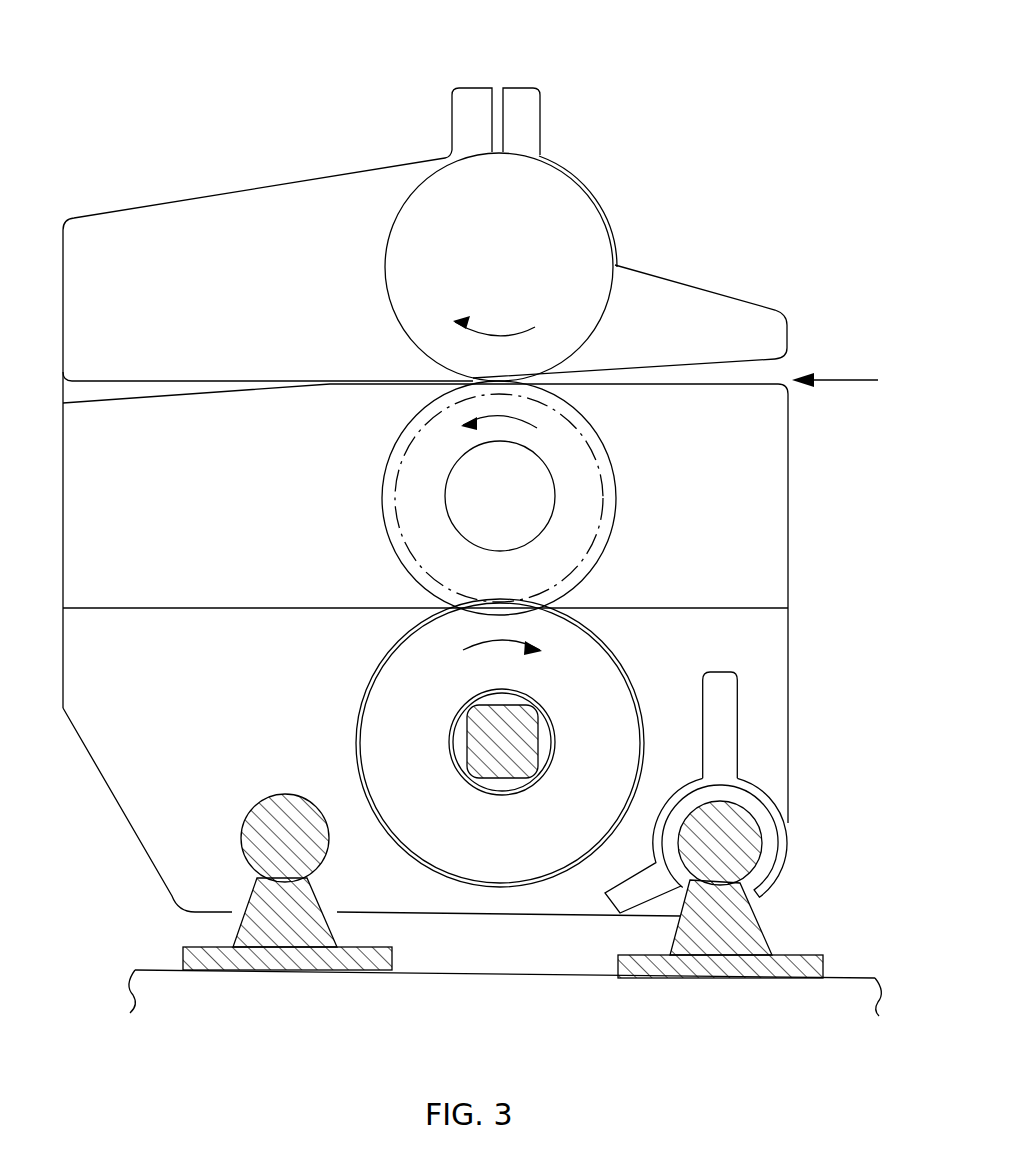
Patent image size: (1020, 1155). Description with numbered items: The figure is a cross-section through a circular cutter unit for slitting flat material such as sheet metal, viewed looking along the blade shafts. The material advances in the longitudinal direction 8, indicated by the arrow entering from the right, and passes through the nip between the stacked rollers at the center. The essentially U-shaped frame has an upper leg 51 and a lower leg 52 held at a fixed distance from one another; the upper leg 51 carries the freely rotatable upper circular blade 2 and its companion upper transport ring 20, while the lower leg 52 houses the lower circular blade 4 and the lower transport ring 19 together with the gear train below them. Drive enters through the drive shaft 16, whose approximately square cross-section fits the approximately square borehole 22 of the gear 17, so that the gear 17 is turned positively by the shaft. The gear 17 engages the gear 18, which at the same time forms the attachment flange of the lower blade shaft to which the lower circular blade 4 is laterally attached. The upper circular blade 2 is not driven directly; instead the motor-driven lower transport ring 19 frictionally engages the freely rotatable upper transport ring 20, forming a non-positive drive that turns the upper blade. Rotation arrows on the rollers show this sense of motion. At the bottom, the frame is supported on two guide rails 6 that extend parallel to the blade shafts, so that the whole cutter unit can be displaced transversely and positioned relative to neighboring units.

The upper circular blade 2 is at (565, 230).
The lower circular blade 4 is at (497, 10).
The guide rails 6 is at (265, 808).
The longitudinal direction 8 is at (838, 378).
The drive shaft 16 is at (533, 731).
The gear 17 is at (443, 820).
The gear 18 is at (573, 460).
The lower transport ring 19 is at (560, 498).
The upper transport ring 20 is at (520, 264).
The borehole 22 is at (478, 748).
The upper leg 51 is at (172, 232).
The lower leg 52 is at (333, 412).